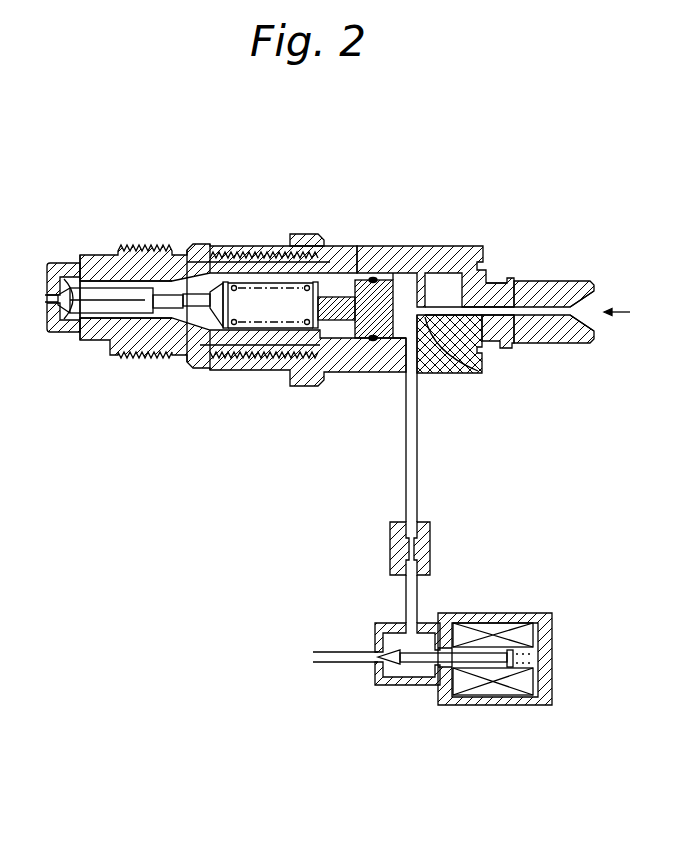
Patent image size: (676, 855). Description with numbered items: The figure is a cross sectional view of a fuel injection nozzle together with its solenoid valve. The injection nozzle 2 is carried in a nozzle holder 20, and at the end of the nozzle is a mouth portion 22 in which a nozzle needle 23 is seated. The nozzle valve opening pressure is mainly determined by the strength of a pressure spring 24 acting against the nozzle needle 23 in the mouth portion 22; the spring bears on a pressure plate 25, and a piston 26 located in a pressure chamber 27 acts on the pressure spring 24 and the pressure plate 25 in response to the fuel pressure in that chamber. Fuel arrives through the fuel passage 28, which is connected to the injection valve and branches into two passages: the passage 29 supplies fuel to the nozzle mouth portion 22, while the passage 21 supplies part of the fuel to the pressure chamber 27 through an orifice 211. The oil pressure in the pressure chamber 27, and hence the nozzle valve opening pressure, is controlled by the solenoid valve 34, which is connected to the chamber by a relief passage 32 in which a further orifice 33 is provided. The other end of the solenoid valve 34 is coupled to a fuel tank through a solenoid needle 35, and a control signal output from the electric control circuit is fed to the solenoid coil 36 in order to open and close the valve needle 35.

The injection nozzle 2 is at (406, 208).
The nozzle holder 20 is at (402, 249).
The fuel passage 21 is at (499, 342).
The orifice 211 is at (483, 373).
The mouth portion 22 is at (104, 326).
The nozzle needle 23 is at (83, 334).
The pressure spring 24 is at (228, 352).
The pressure plate 25 is at (297, 298).
The piston 26 is at (362, 360).
The pressure chamber 27 is at (440, 362).
The fuel passage 28 is at (547, 281).
The fuel passage 29 is at (470, 283).
The relief passage 32 is at (418, 473).
The orifice 33 is at (390, 556).
The solenoid valve 34 is at (442, 690).
The solenoid needle 35 is at (388, 678).
The solenoid coil 36 is at (508, 690).